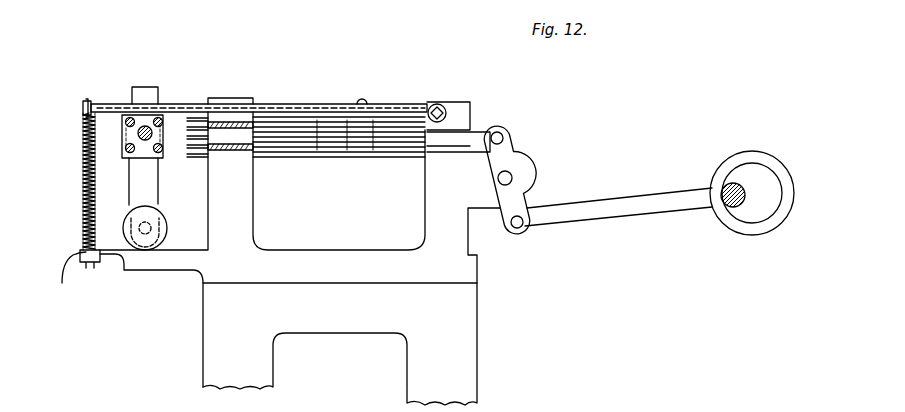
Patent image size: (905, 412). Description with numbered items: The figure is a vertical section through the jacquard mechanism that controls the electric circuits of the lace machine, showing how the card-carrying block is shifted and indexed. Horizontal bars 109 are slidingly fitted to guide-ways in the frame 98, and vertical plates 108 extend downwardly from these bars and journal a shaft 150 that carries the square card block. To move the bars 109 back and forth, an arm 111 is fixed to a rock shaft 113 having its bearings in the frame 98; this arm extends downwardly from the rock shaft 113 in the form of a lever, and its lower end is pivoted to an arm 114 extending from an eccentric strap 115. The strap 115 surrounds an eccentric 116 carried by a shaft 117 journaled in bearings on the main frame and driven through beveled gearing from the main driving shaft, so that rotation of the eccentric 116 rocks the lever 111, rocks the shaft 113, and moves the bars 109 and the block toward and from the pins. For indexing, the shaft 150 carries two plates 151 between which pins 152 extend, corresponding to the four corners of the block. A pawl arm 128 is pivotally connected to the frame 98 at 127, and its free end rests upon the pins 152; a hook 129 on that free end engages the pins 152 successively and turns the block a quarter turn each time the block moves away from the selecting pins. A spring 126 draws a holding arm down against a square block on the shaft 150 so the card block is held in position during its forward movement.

The frame 98 is at (240, 216).
The vertical plates 108 is at (153, 197).
The horizontal bars 109 is at (183, 130).
The arm 111 is at (506, 147).
The rock shaft 113 is at (512, 178).
The arm 114 is at (656, 207).
The eccentric strap 115 is at (762, 156).
The eccentric 116 is at (768, 212).
The shaft 117 is at (735, 207).
The spring 126 is at (72, 207).
The pivot 127 is at (436, 104).
The pawl arm 128 is at (300, 115).
The hook 129 is at (134, 107).
The shaft 150 is at (145, 141).
The plates 151 is at (122, 128).
The pins 152 is at (159, 118).